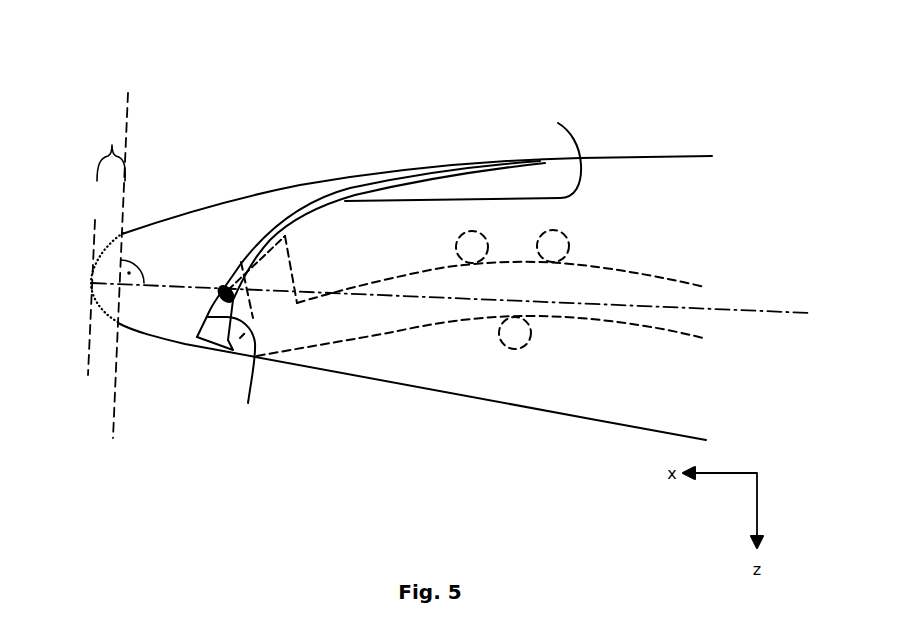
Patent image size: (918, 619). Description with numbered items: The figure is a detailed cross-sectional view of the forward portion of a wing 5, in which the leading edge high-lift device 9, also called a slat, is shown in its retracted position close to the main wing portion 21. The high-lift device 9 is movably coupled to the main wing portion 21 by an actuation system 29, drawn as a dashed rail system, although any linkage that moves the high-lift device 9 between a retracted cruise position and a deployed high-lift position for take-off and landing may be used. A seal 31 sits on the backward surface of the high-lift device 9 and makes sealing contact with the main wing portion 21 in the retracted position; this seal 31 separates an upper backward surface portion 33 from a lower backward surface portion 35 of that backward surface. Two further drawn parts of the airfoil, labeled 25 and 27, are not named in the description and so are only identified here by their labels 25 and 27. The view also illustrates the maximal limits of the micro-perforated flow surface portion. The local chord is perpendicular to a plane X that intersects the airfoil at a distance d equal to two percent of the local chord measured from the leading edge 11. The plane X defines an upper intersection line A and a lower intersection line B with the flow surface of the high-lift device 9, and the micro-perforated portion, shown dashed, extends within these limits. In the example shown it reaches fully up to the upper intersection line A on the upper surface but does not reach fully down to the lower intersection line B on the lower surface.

The wing 5 is at (655, 97).
The leading edge high-lift device 9 is at (283, 207).
The leading edge 11 is at (93, 282).
The main wing portion 21 is at (552, 385).
The suction side skin 25 is at (373, 170).
The sheath root 27 is at (178, 344).
The actuation system 29 is at (400, 332).
The seal 31 is at (220, 292).
The upper backward surface portion 33 is at (463, 150).
The lower backward surface portion 35 is at (243, 375).
The plane X is at (128, 131).
The distance d is at (111, 149).
The upper intersection line A is at (123, 233).
The lower intersection line B is at (118, 325).